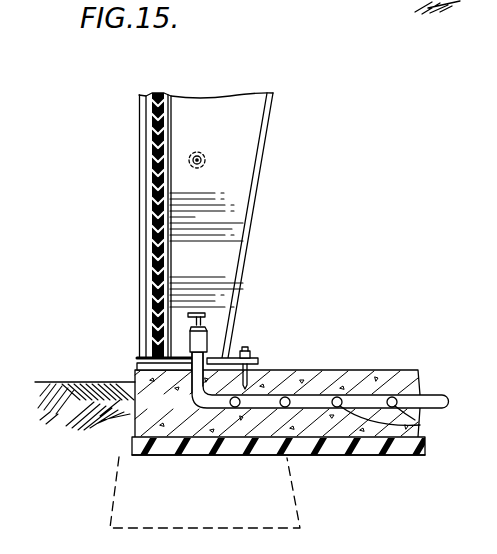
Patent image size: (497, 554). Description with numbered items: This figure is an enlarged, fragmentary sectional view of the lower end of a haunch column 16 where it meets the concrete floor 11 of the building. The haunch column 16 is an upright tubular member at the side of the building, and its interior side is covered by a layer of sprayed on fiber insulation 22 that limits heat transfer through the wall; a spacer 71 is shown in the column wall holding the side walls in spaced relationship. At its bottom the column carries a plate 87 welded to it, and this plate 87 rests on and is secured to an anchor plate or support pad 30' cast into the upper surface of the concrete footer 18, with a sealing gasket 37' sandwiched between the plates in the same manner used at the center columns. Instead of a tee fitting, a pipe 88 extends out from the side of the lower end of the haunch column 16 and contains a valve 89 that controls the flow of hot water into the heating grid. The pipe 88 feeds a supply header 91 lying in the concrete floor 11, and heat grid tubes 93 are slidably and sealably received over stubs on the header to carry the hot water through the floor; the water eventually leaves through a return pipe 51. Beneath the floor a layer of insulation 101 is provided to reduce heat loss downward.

The concrete floor 11 is at (405, 370).
The haunch column 16 is at (238, 82).
The footer 18 is at (293, 465).
The sprayed on fiber insulation 22 is at (167, 176).
The anchor plate 30' is at (259, 355).
The sealing gasket 37' is at (287, 358).
The return pipe 51 is at (438, 19).
The spacer 71 is at (204, 153).
The plate 87 is at (233, 362).
The pipe 88 is at (223, 362).
The valve 89 is at (200, 350).
The supply header 91 is at (433, 393).
The heat grid tube 93 is at (420, 425).
The layer of insulation 101 is at (385, 457).